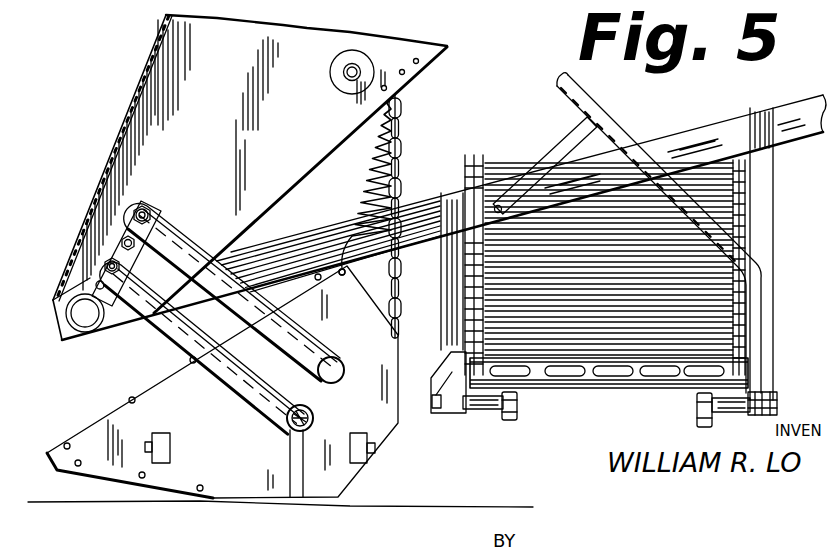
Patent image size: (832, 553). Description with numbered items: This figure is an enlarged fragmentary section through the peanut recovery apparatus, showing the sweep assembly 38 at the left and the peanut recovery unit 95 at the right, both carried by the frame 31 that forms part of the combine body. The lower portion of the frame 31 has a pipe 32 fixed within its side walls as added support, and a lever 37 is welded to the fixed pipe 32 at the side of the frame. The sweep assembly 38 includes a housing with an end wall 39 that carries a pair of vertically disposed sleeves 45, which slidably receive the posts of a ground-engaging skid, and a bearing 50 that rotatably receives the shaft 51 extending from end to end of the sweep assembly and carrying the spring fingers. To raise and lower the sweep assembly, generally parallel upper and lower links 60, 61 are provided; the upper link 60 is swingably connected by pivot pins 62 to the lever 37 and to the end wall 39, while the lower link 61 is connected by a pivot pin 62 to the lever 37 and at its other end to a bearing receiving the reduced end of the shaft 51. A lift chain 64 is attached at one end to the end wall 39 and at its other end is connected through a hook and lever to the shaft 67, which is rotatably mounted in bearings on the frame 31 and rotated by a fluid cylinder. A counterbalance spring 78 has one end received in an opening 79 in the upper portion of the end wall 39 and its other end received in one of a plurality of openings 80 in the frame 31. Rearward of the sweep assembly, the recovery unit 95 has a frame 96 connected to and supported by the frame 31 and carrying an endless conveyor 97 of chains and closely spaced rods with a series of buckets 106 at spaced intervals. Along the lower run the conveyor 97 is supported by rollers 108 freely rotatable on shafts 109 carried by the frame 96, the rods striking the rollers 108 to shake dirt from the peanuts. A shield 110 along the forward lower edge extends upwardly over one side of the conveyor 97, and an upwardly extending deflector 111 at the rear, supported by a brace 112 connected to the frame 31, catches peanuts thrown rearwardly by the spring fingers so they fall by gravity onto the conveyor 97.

The frame 31 is at (142, 70).
The pipe 32 is at (62, 339).
The lever 37 is at (82, 283).
The sweep assembly 38 is at (175, 518).
The end wall 39 is at (82, 440).
The sleeve 45 is at (185, 414).
The bearing 50 is at (284, 430).
The shaft 51 is at (314, 416).
The upper link 60 is at (198, 248).
The lower link 61 is at (252, 396).
The pivot pin 62 is at (148, 208).
The lift chain 64 is at (402, 170).
The shaft 67 is at (354, 66).
The counterbalance spring 78 is at (362, 160).
The opening 79 is at (335, 260).
The opening 80 is at (419, 61).
The peanut recovery unit 95 is at (658, 401).
The frame 96 is at (776, 392).
The endless conveyor 97 is at (621, 401).
The bucket 106 is at (571, 380).
The roller 108 is at (508, 422).
The shaft 109 is at (478, 410).
The shield 110 is at (440, 356).
The deflector 111 is at (632, 130).
The brace 112 is at (560, 146).